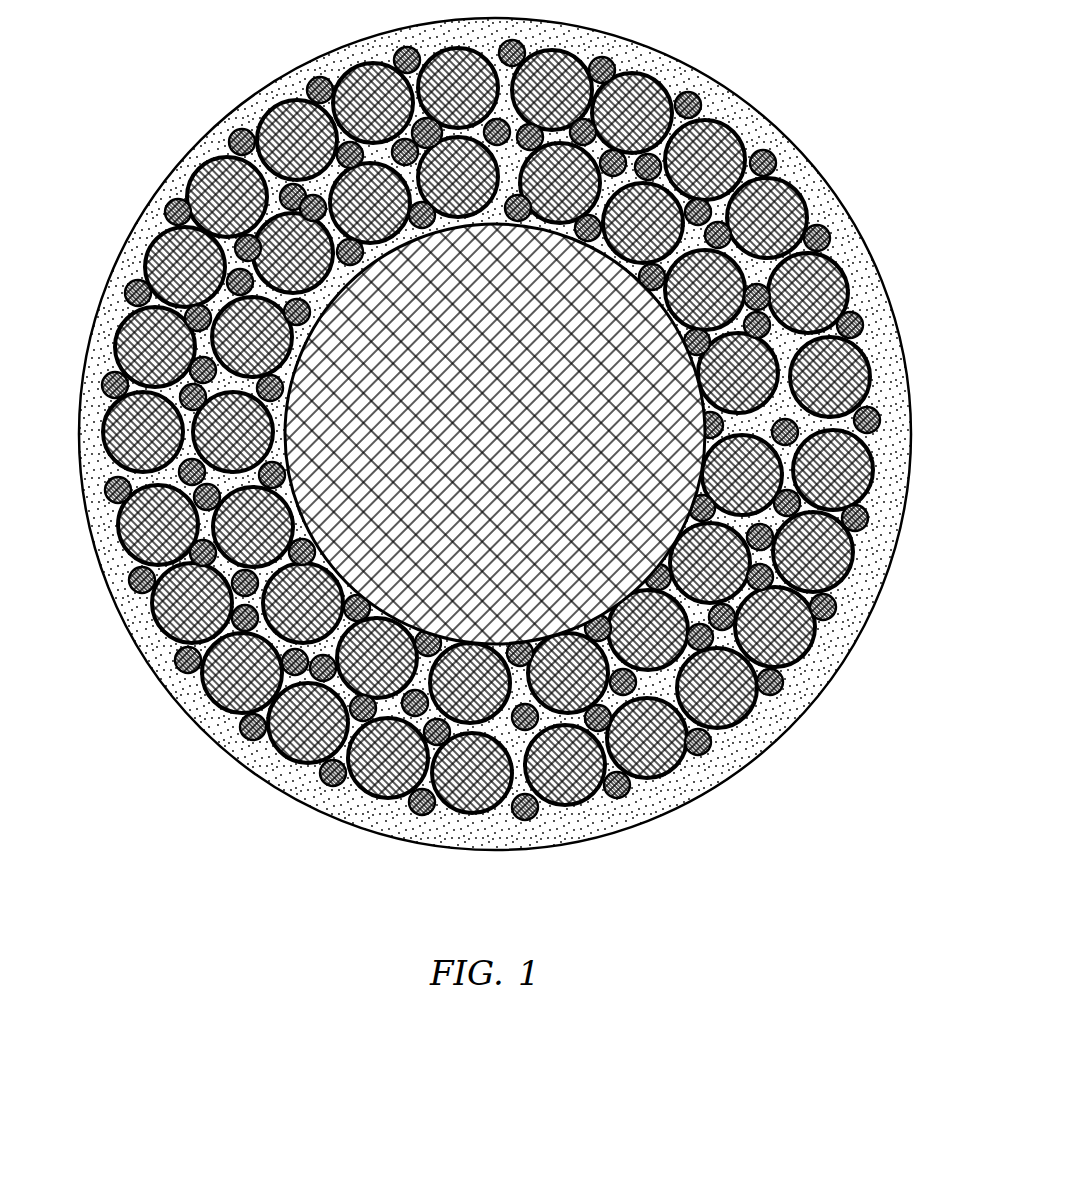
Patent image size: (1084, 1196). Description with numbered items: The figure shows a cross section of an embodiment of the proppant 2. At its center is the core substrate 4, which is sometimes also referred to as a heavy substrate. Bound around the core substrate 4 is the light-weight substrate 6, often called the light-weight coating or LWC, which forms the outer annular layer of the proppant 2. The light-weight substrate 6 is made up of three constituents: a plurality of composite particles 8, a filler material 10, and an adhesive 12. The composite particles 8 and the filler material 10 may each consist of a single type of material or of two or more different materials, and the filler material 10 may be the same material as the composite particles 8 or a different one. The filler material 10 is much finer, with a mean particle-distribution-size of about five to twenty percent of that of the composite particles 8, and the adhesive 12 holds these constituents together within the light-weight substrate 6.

The proppant 2 is at (504, 431).
The core substrate 4 is at (636, 305).
The light-weight substrate 6 is at (168, 182).
The composite particles 8 is at (802, 690).
The filler material 10 is at (907, 413).
The adhesive 12 is at (862, 262).